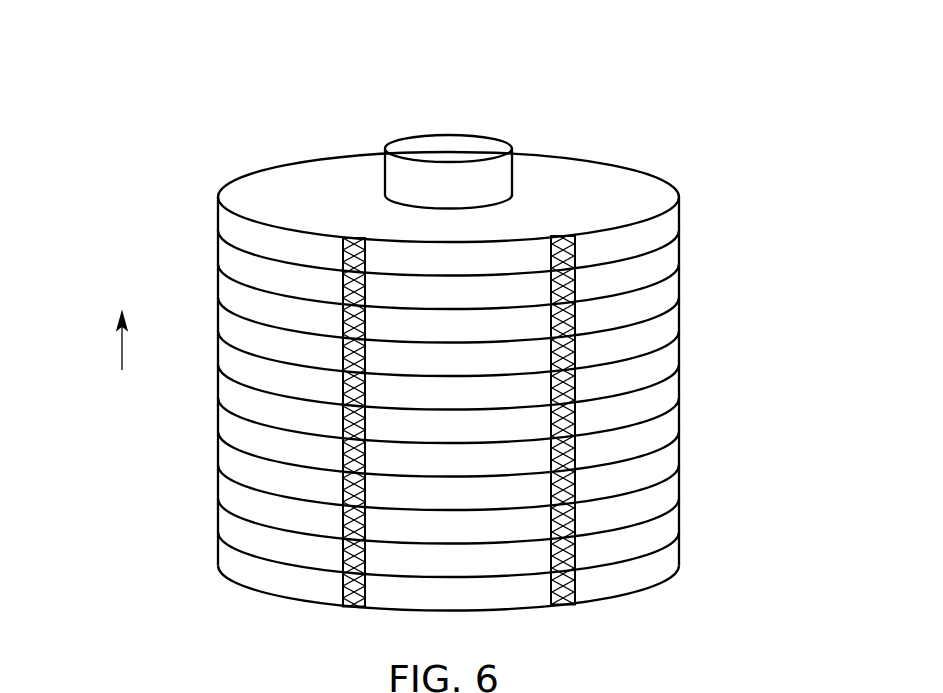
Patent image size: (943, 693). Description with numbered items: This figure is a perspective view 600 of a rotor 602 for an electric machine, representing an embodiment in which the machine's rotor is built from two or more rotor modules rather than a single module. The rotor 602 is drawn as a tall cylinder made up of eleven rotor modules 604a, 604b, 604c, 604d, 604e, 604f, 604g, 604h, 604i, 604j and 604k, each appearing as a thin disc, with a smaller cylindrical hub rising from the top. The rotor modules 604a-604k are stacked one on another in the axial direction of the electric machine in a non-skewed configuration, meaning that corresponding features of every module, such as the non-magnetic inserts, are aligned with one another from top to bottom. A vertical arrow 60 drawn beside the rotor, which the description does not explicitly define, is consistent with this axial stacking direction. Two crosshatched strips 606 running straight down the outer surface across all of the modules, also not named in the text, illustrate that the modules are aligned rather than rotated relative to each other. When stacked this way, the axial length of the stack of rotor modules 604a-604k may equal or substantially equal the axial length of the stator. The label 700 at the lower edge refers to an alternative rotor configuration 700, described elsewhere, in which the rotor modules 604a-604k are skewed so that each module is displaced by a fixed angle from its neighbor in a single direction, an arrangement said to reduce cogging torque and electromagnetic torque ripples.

The perspective view 600 is at (705, 67).
The rotor 602 is at (589, 158).
The rotor module 604a is at (672, 217).
The rotor module 604b is at (672, 250).
The rotor module 604c is at (672, 284).
The rotor module 604d is at (672, 318).
The rotor module 604e is at (672, 351).
The rotor module 604f is at (672, 384).
The rotor module 604g is at (672, 418).
The rotor module 604h is at (672, 452).
The rotor module 604i is at (672, 485).
The rotor module 604j is at (672, 518).
The rotor module 604k is at (672, 552).
The reinforcement strips 606 is at (366, 518).
The build direction 60 is at (120, 358).
The rotor configuration 700 is at (760, 692).